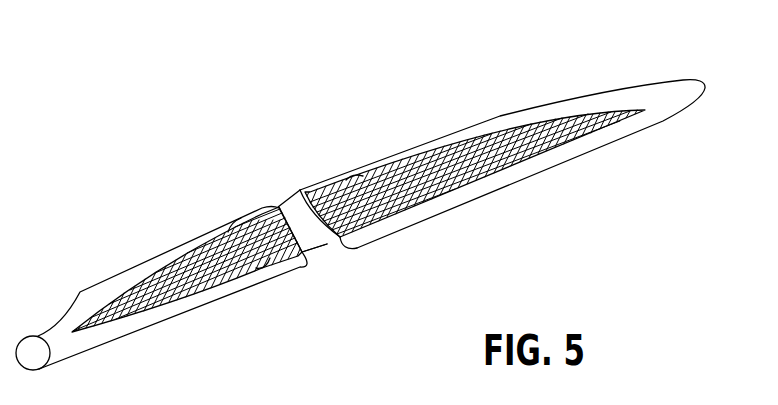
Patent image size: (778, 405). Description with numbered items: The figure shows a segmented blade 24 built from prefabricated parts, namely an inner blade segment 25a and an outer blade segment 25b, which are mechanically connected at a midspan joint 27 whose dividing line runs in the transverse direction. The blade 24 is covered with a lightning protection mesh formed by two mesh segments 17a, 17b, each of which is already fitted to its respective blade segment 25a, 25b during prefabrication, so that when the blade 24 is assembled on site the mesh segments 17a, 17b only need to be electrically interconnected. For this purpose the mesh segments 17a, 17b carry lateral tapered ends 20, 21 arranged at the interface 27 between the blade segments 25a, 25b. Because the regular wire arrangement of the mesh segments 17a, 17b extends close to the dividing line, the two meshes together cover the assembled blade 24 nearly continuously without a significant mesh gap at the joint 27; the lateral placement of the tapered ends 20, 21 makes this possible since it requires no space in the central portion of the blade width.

The mesh segment 17a is at (195, 297).
The mesh segment 17b is at (437, 147).
The lateral tapered end 20 is at (298, 192).
The lateral tapered end 21 is at (317, 248).
The segmented blade 24 is at (360, 210).
The inner blade segment 25a is at (143, 253).
The outer blade segment 25b is at (518, 110).
The midspan joint 27 is at (340, 279).